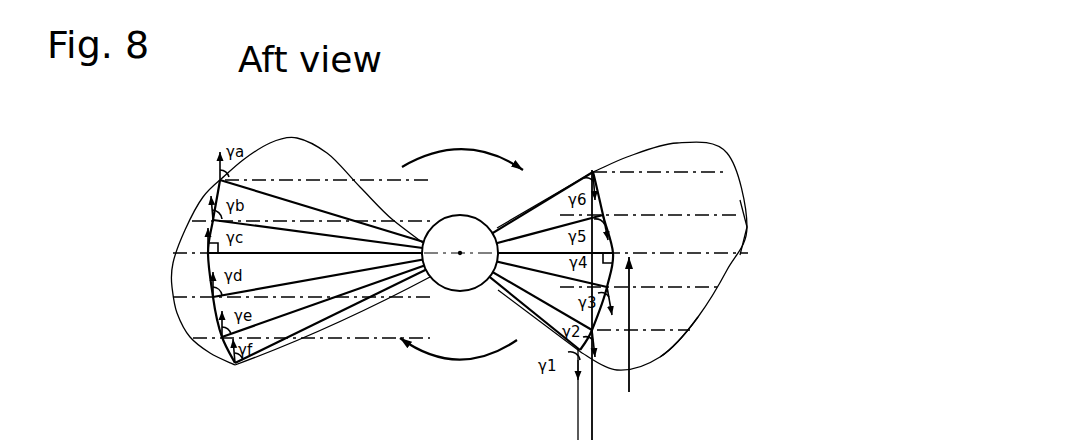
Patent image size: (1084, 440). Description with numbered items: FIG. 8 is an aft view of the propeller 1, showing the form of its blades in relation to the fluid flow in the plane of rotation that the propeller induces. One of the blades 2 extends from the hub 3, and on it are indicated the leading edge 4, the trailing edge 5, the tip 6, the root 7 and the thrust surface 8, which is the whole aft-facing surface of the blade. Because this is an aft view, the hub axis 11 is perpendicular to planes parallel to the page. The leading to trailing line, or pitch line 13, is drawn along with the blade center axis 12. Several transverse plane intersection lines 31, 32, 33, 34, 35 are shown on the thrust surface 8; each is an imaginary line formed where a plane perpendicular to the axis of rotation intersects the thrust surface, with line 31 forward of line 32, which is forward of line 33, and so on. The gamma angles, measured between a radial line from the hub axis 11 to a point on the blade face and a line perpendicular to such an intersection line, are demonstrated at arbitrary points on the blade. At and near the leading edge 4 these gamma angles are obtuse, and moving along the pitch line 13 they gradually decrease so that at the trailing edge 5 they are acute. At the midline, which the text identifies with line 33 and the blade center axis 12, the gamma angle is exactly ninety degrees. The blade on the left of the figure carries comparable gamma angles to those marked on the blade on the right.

The propeller 1 is at (438, 140).
The blade 2 is at (532, 150).
The hub 3 is at (459, 293).
The leading edge 4 is at (650, 363).
The trailing edge 5 is at (650, 148).
The tip 6 is at (748, 222).
The root 7 is at (495, 293).
The thrust surface 8 is at (693, 242).
The hub axis 11 is at (458, 258).
The blade center axis 12 is at (627, 339).
The pitch line 13 is at (594, 170).
The transverse plane intersection line 31 is at (672, 330).
The transverse plane intersection line 32 is at (698, 290).
The transverse plane intersection line 33 is at (715, 257).
The transverse plane intersection line 34 is at (717, 208).
The transverse plane intersection line 35 is at (702, 172).